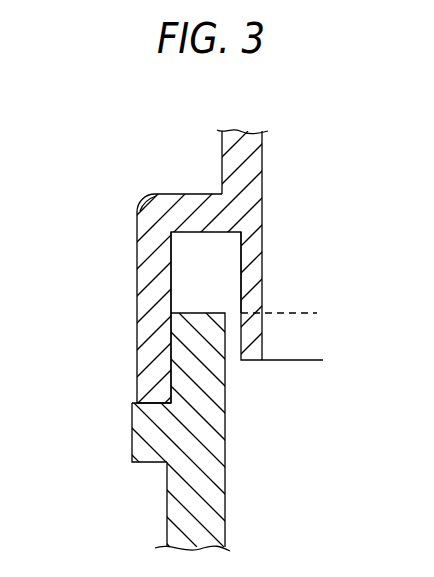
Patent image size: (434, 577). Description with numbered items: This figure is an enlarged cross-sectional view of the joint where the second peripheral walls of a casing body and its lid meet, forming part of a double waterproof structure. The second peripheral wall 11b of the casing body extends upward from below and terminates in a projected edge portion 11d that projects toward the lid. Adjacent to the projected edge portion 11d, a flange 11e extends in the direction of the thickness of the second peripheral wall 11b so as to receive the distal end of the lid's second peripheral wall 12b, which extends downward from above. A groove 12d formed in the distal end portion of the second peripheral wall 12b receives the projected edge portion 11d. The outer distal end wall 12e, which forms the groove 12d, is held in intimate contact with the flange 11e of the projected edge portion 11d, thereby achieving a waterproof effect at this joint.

The second peripheral wall 11b is at (215, 502).
The projected edge portion 11d is at (217, 373).
The flange 11e is at (142, 442).
The second peripheral wall 12b is at (255, 166).
The groove 12d is at (227, 247).
The outer distal end wall 12e is at (142, 342).